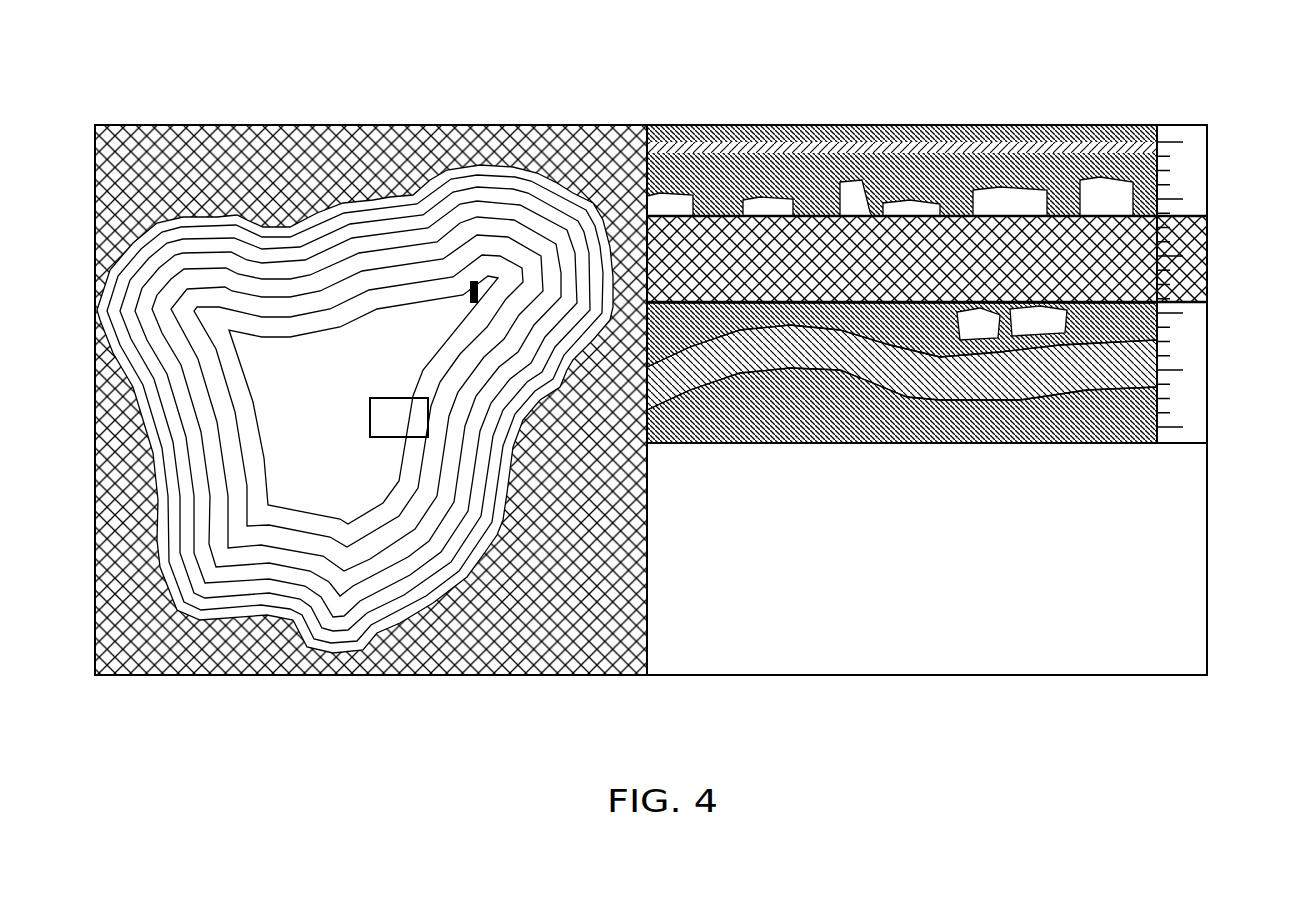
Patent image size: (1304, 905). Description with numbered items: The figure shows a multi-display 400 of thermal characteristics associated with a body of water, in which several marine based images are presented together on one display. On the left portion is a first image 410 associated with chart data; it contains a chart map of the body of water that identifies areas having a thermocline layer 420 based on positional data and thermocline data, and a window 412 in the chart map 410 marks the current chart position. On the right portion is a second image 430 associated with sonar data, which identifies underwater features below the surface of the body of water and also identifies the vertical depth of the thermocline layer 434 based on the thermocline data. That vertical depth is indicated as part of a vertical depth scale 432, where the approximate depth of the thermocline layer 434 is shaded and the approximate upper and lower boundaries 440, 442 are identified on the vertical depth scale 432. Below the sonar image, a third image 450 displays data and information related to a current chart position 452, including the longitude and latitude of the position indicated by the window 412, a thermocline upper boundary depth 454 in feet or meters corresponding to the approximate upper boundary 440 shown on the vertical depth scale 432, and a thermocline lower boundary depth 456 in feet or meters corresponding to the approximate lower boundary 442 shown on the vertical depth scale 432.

The display screen 400 is at (62, 72).
The first image 410 is at (475, 74).
The window 412 is at (368, 408).
The thermocline layer 420 is at (473, 283).
The second image 430 is at (1008, 74).
The vertical depth scale 432 is at (1195, 74).
The thermocline layer 434 is at (1214, 218).
The approximate upper boundary 440 is at (1209, 217).
The approximate lower boundary 442 is at (1209, 302).
The third image 450 is at (967, 559).
The current chart position 452 is at (932, 513).
The thermocline upper boundary depth 454 is at (858, 590).
The thermocline lower boundary depth 456 is at (858, 667).